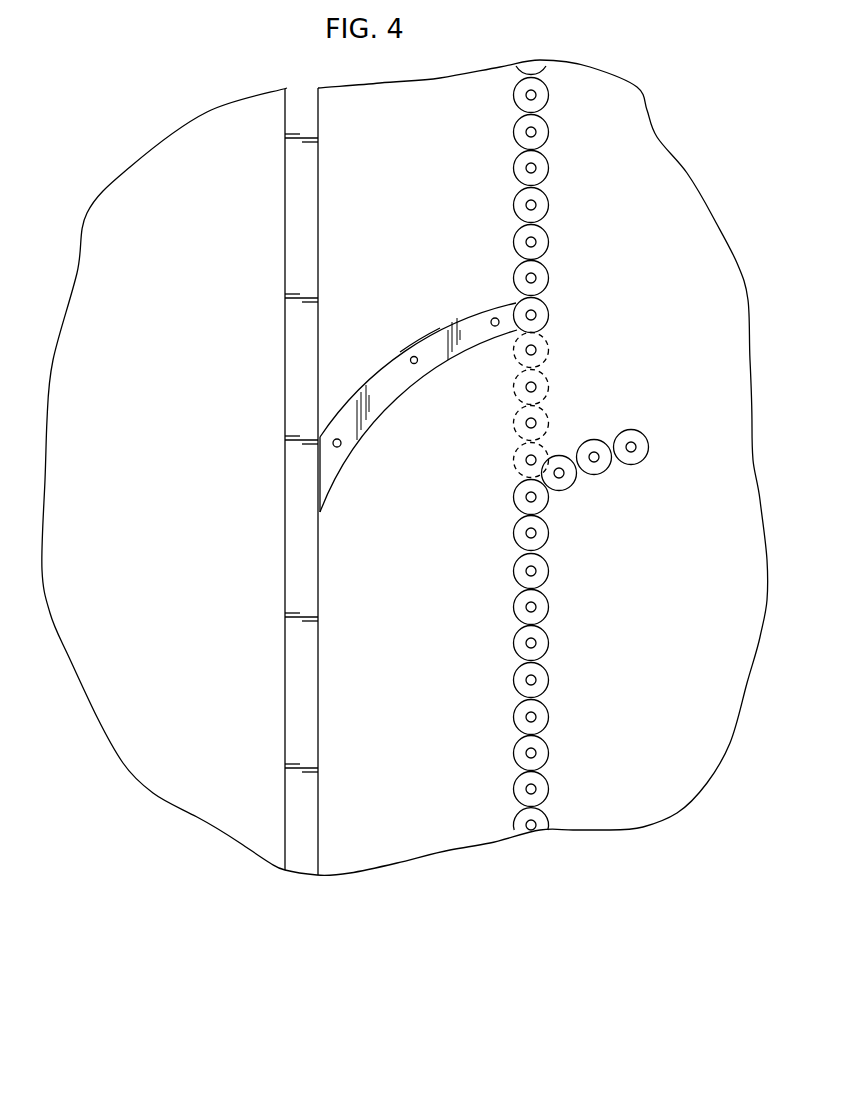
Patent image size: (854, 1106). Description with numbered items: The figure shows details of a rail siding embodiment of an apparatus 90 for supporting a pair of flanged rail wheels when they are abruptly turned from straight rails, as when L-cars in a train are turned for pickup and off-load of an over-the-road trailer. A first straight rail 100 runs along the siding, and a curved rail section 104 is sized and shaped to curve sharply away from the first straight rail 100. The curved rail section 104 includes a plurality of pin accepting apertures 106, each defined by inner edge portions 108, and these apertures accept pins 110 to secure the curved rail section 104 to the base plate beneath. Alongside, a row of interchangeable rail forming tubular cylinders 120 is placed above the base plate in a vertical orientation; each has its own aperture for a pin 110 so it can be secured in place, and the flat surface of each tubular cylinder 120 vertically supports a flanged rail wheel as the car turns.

The apparatus 90 is at (225, 870).
The first straight rail 100 is at (318, 838).
The curved rail section 104 is at (379, 414).
The pin accepting apertures 106 is at (410, 356).
The inner edge portions 108 is at (417, 363).
The pins 110 is at (526, 96).
The rail forming tubular cylinders 120 is at (548, 96).